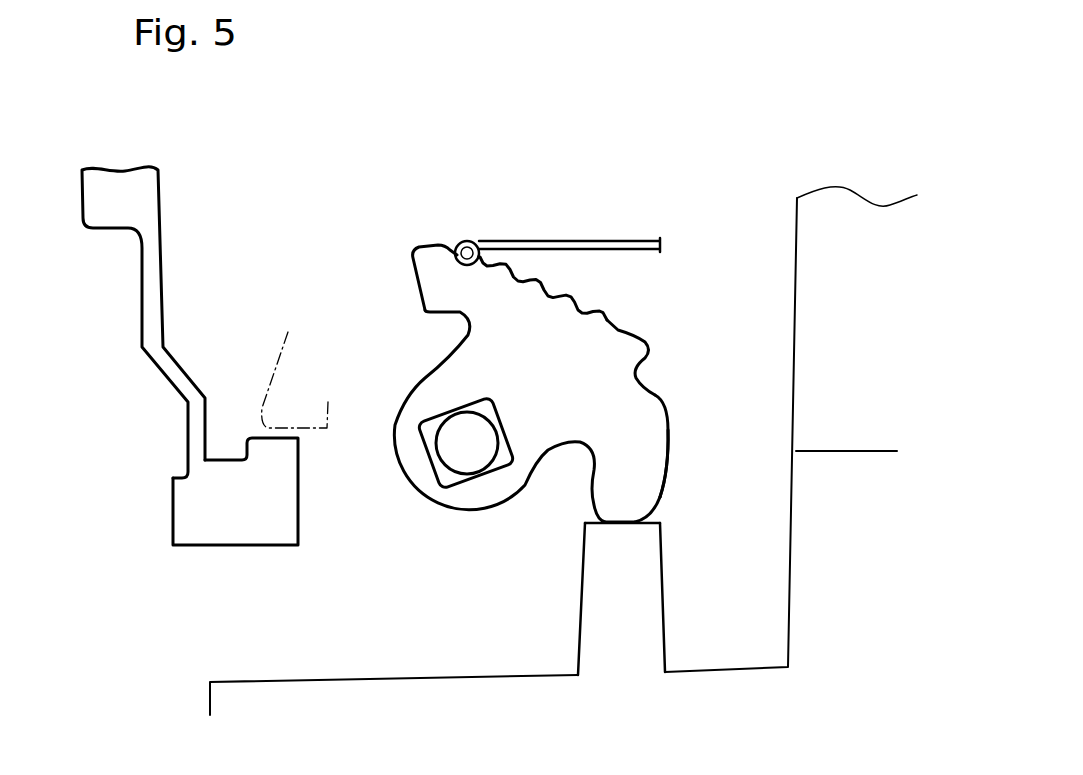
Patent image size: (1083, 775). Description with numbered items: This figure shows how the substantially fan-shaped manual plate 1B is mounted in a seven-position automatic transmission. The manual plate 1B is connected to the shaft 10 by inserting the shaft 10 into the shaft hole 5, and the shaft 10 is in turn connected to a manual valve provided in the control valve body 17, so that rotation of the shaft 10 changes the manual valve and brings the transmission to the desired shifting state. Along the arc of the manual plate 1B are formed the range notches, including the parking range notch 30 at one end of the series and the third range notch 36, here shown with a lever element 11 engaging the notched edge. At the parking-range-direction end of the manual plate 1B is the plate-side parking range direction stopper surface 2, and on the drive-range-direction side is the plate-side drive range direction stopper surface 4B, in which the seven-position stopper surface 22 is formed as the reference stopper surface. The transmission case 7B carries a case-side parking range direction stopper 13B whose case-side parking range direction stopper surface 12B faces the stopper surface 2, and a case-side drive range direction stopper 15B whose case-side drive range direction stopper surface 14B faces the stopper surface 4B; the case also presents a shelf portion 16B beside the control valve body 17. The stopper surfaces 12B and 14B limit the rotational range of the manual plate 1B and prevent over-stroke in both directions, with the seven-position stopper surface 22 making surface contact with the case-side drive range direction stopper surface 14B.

The manual plate 1B is at (673, 460).
The plate-side parking range direction stopper surface 2 is at (412, 287).
The plate-side drive range direction stopper surface 4B is at (607, 529).
The shaft hole 5 is at (490, 473).
The transmission case 7B is at (172, 512).
The shaft 10 is at (452, 478).
The lever rod 11 is at (569, 229).
The case-side parking range direction stopper surface 12B is at (253, 430).
The case-side parking range direction stopper 13B is at (267, 523).
The case-side drive range direction stopper surface 14B is at (656, 505).
The case-side drive range direction stopper 15B is at (648, 605).
The shelf portion 16B is at (847, 451).
The control valve body 17 is at (818, 283).
The 7-position stopper surface 22 is at (633, 525).
The parking range notch 30 is at (633, 378).
The 3rd range notch 36 is at (461, 245).